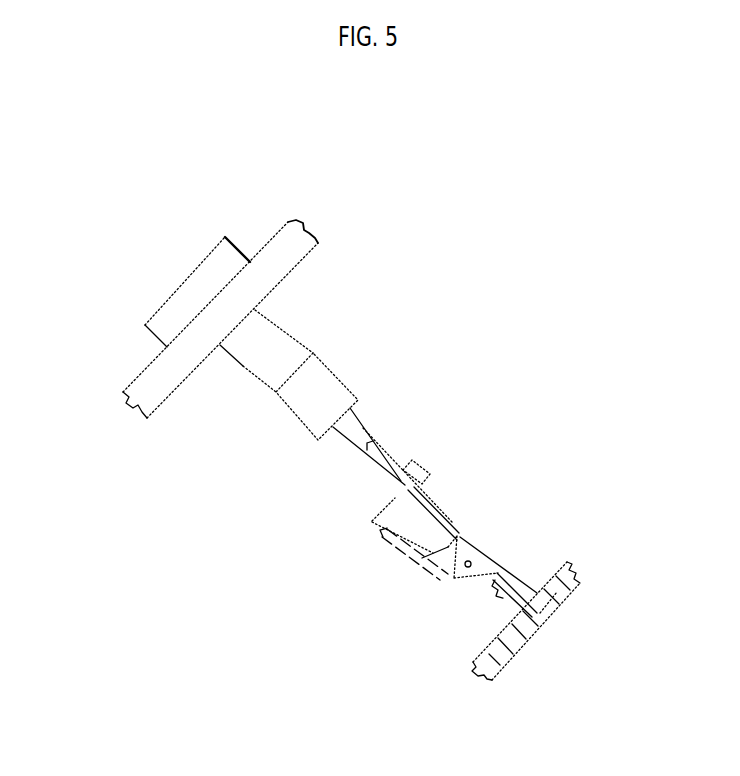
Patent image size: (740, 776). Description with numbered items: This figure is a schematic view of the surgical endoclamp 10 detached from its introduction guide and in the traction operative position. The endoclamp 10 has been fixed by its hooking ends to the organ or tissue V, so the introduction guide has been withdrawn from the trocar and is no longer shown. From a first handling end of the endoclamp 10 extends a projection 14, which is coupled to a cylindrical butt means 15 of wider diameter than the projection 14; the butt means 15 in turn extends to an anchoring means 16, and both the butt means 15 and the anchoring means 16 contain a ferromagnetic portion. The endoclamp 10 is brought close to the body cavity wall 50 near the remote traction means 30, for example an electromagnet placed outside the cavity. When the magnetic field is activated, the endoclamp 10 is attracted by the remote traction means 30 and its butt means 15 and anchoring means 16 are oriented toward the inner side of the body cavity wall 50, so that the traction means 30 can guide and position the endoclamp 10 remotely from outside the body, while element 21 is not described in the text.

The surgical endoclamp 10 is at (386, 441).
The projection 14 is at (357, 425).
The cylindrical butt means 15 is at (345, 390).
The anchoring means 16 is at (265, 352).
The slider 21 is at (372, 523).
The remote traction means 30 is at (155, 325).
The body cavity wall 50 is at (140, 395).
The organ or tissue V is at (573, 585).